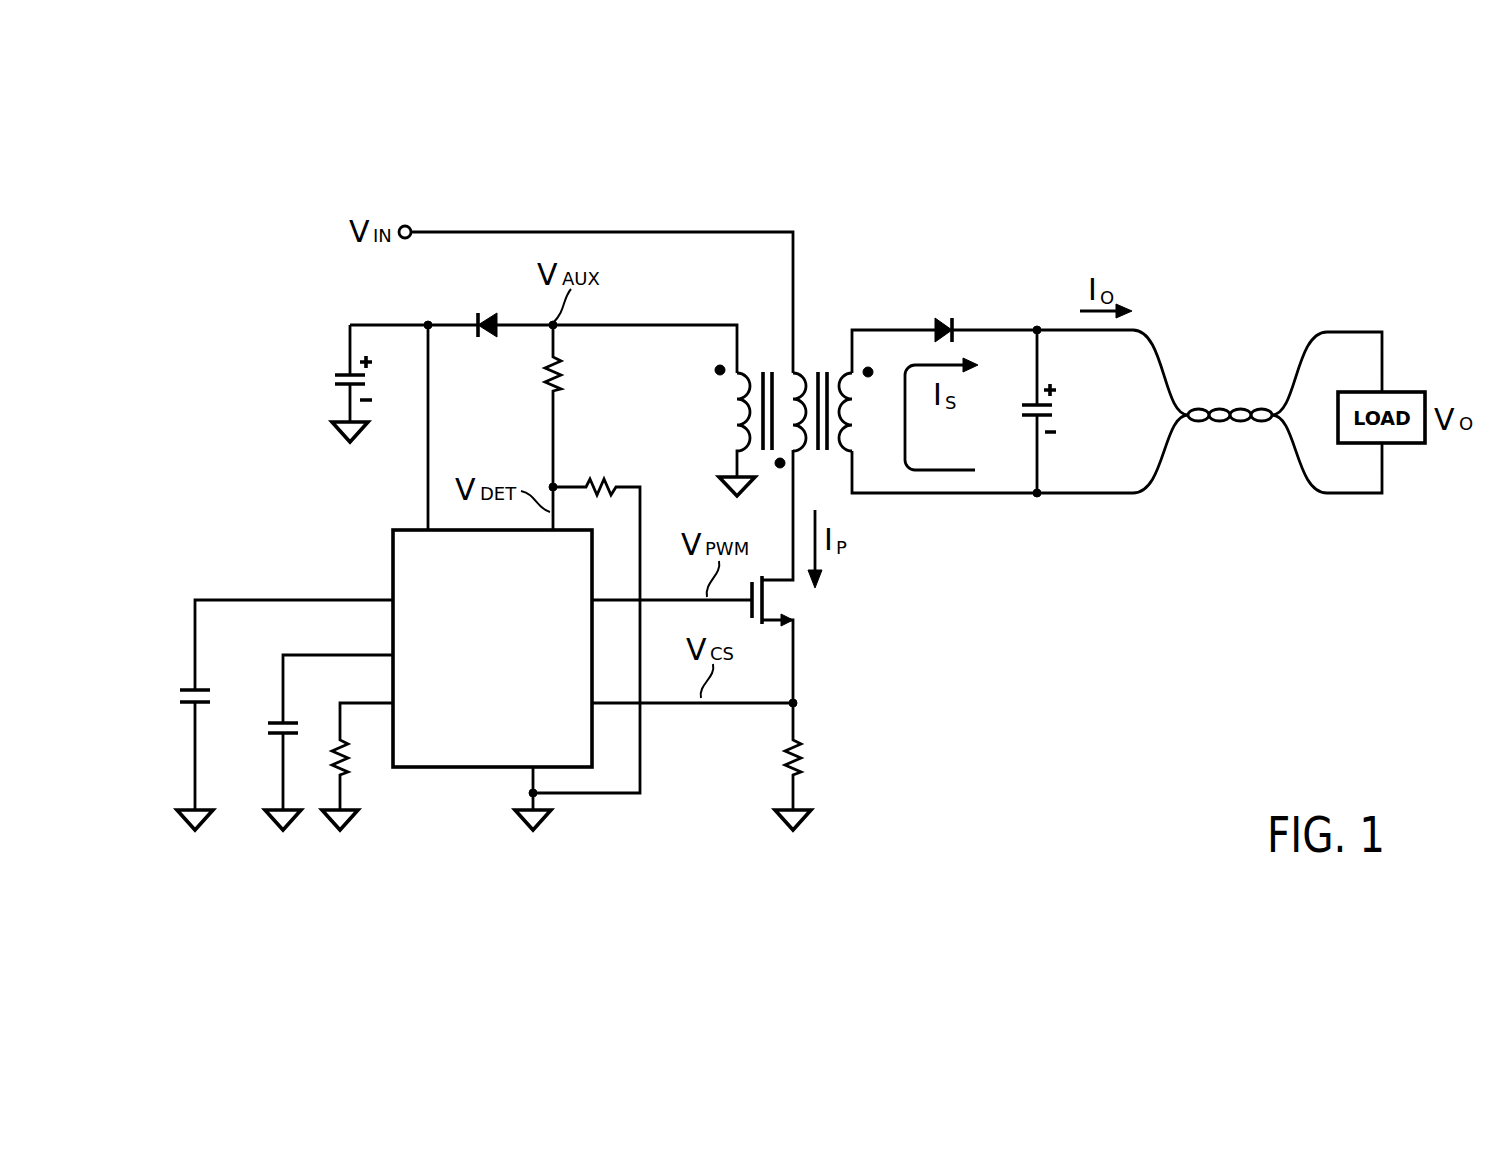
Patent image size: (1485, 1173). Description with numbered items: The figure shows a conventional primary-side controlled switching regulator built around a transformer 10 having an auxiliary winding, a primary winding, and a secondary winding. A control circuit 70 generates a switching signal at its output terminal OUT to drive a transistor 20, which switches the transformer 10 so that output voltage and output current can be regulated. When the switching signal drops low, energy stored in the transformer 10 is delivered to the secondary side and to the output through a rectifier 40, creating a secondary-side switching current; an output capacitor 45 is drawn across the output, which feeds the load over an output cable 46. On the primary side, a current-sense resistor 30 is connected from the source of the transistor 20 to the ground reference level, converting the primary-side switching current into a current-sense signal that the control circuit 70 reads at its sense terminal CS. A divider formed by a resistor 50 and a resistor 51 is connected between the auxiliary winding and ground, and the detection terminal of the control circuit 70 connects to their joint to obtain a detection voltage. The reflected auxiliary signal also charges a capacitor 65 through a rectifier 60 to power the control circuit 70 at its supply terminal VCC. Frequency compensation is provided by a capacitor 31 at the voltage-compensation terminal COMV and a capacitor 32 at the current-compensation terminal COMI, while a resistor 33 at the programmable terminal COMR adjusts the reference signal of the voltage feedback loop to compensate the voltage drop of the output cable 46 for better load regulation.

The transformer 10 is at (808, 341).
The transistor 20 is at (797, 605).
The current-sense resistor 30 is at (782, 757).
The capacitor 31 is at (187, 692).
The capacitor 32 is at (273, 731).
The resistor 33 is at (356, 766).
The rectifier 40 is at (946, 313).
The output capacitor 45 is at (1058, 411).
The output cable 46 is at (1222, 401).
The resistor 50 is at (568, 373).
The resistor 51 is at (603, 476).
The rectifier 60 is at (487, 337).
The capacitor 65 is at (331, 378).
The control circuit 70 is at (391, 563).